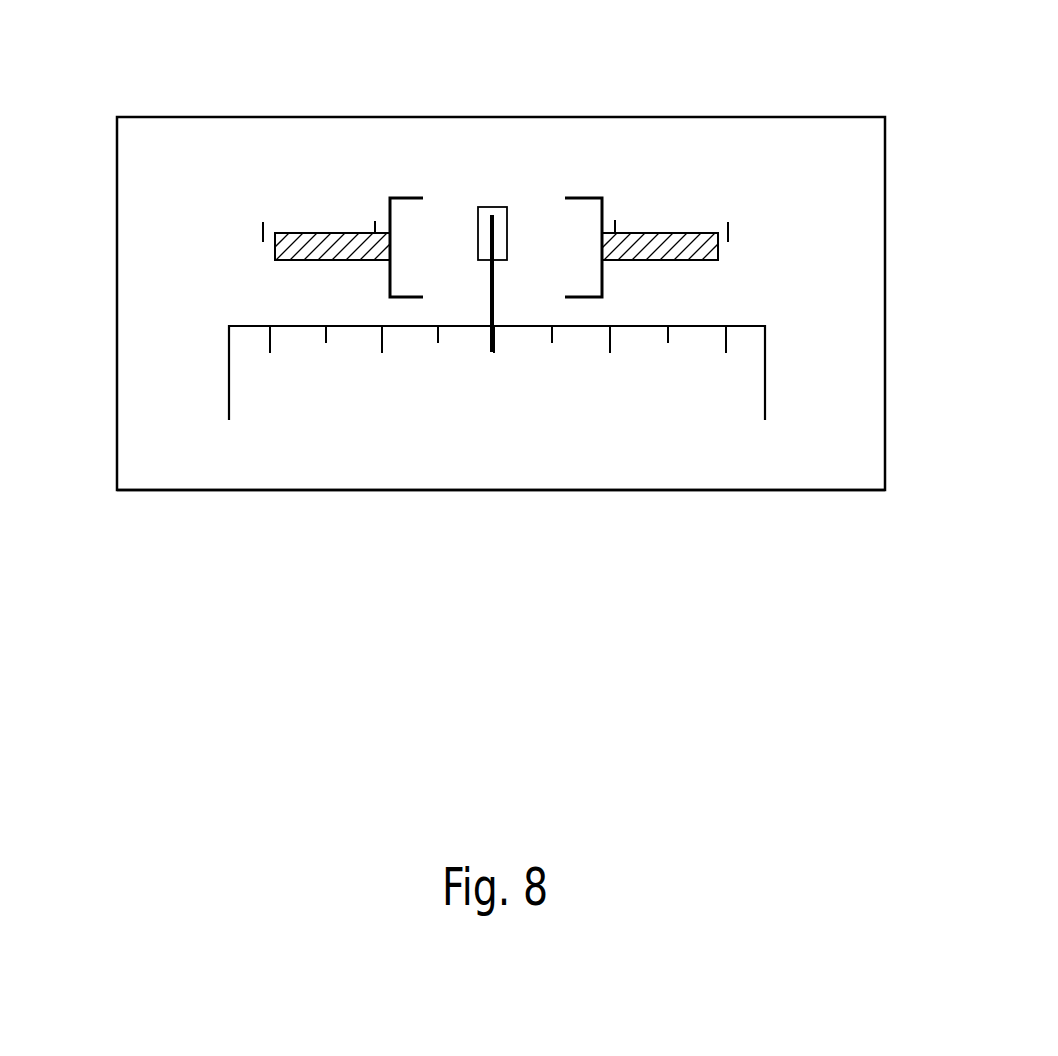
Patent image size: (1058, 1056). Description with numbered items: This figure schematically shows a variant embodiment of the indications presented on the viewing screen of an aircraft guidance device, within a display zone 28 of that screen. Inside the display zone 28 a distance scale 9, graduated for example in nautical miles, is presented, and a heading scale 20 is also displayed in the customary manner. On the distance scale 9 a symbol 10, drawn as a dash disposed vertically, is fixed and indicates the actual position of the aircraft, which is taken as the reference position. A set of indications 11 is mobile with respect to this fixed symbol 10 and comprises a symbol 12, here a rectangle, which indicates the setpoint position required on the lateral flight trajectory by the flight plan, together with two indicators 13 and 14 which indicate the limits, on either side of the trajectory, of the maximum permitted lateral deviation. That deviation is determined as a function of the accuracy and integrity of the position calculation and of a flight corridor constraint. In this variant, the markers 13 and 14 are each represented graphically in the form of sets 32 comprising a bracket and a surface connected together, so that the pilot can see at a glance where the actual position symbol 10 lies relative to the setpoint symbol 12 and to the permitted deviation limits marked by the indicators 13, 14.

The distance scale 9 is at (244, 247).
The symbol 10 is at (490, 340).
The set of indications 11 is at (708, 172).
The symbol 12 is at (490, 207).
The indicator 13 is at (380, 190).
The indicator 14 is at (611, 195).
The heading scale 20 is at (210, 365).
The display zone 28 is at (545, 492).
The set comprising a bracket and a surface 32 is at (365, 225).